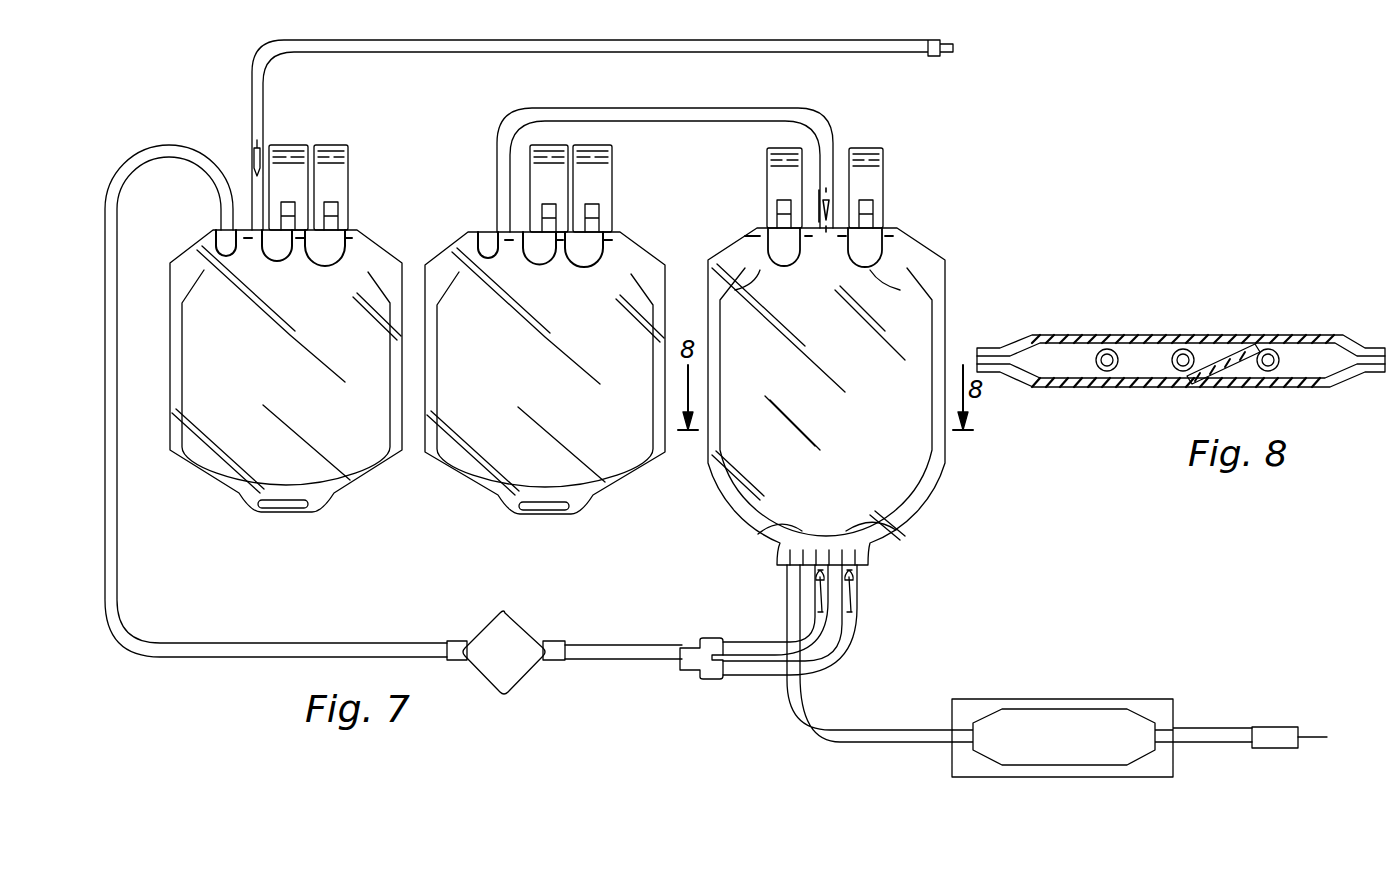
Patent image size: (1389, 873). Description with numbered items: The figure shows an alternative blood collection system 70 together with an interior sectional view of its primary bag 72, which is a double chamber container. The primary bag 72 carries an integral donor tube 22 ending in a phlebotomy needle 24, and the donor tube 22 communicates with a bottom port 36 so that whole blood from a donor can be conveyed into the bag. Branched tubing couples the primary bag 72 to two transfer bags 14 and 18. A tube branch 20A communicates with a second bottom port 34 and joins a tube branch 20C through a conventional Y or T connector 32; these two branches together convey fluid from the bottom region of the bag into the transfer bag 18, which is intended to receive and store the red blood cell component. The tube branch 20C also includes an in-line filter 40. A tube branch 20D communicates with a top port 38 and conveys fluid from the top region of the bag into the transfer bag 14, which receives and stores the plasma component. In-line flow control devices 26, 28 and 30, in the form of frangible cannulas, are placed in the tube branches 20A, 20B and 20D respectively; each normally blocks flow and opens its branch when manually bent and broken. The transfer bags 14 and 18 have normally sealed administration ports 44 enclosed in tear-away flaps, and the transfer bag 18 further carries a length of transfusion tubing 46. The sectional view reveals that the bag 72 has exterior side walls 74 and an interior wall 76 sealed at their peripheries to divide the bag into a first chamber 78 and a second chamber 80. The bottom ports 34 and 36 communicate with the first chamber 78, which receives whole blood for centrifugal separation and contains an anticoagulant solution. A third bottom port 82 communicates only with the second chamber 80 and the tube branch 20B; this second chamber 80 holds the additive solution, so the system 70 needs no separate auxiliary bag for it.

In FIG. 7, the system 70 is at (173, 120).
In FIG. 7, the transfer bag 18 is at (340, 290).
In FIG. 7, the administration port 44 is at (322, 145).
In FIG. 7, the transfer bag 14 is at (605, 292).
In FIG. 7, the primary bag 72 is at (895, 292).
In FIG. 8, the primary bag 72 is at (1270, 312).
In FIG. 7, the flow control device 30 is at (820, 210).
In FIG. 7, the top port 38 is at (826, 255).
In FIG. 7, the bottom port 36 is at (770, 530).
In FIG. 8, the bottom port 36 is at (1100, 368).
In FIG. 7, the bottom port 34 is at (826, 545).
In FIG. 8, the bottom port 34 is at (1172, 370).
In FIG. 7, the third bottom port 82 is at (880, 520).
In FIG. 8, the third bottom port 82 is at (1310, 350).
In FIG. 7, the transfusion tubing 46 is at (508, 40).
In FIG. 7, the tube branch 20D is at (722, 120).
In FIG. 7, the tube branch 20C is at (388, 650).
In FIG. 7, the in-line filter 40 is at (510, 622).
In FIG. 7, the connector 32 is at (700, 678).
In FIG. 7, the tube branch 20A is at (815, 637).
In FIG. 7, the tube branch 20B is at (857, 646).
In FIG. 7, the flow control device 26 is at (818, 587).
In FIG. 7, the flow control device 28 is at (858, 602).
In FIG. 7, the donor tube 22 is at (905, 733).
In FIG. 7, the phlebotomy needle 24 is at (1262, 732).
In FIG. 8, the first chamber 78 is at (1063, 355).
In FIG. 8, the exterior side wall 74 is at (1150, 335).
In FIG. 8, the interior wall 76 is at (1233, 355).
In FIG. 8, the second chamber 80 is at (1332, 372).